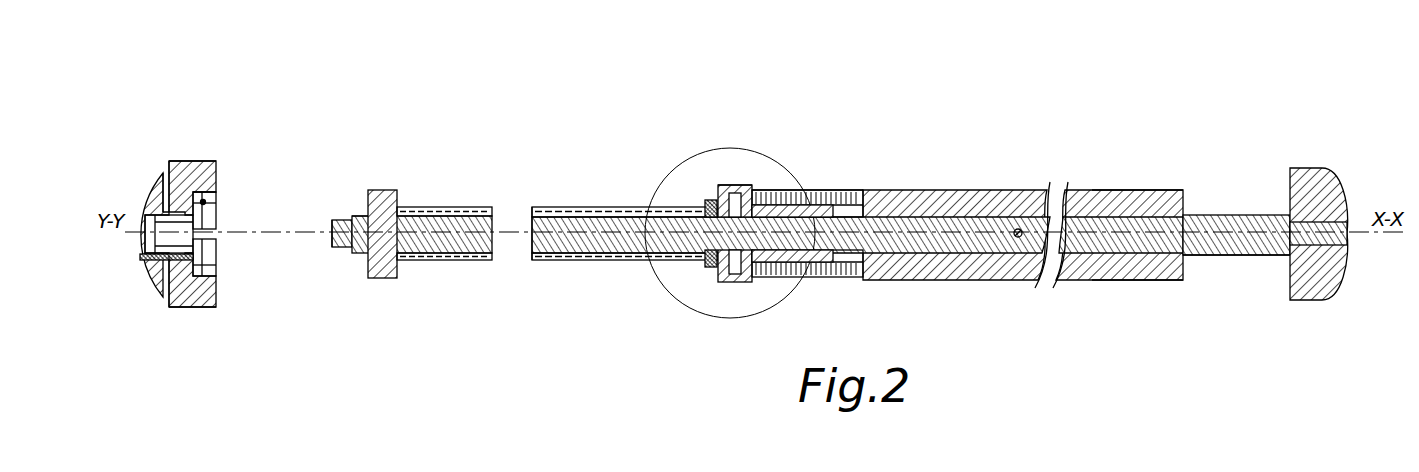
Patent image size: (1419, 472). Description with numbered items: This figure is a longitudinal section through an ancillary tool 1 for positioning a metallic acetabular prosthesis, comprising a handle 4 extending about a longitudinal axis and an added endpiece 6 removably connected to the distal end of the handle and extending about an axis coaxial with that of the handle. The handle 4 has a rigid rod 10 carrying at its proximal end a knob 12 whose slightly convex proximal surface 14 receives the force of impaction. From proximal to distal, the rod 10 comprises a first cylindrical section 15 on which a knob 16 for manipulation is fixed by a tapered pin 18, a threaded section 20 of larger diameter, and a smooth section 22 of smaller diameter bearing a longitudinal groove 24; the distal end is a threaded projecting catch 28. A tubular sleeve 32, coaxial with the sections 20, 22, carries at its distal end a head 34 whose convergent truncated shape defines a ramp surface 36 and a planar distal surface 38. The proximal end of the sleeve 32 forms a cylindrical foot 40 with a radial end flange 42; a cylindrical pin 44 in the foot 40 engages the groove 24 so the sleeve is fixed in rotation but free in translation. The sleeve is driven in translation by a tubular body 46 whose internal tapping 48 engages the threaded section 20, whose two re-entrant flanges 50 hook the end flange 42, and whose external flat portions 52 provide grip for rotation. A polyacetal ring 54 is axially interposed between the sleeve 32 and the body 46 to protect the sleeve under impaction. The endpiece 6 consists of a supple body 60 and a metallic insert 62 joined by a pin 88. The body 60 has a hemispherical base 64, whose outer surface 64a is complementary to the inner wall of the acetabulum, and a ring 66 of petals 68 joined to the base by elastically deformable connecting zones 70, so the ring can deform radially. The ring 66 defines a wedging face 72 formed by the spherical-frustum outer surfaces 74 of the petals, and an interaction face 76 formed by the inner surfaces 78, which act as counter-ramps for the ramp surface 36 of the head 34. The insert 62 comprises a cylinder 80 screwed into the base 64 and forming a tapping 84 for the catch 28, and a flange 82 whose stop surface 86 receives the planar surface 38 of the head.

The ancillary tool 1 is at (955, 269).
The handle 4 is at (1003, 207).
The endpiece 6 is at (197, 229).
The rigid rod 10 is at (1232, 212).
The knob 12 is at (1308, 168).
The convex proximal surface 14 is at (1349, 221).
The first cylindrical section 15 is at (1223, 257).
The knob for manipulation 16 is at (1140, 280).
The tapered pin 18 is at (1019, 238).
The threaded section 20 is at (824, 245).
The smooth section 22 is at (595, 243).
The longitudinal groove 24 is at (600, 207).
The projecting catch 28 is at (334, 219).
The tubular sleeve 32 is at (553, 205).
The head 34 is at (404, 214).
The truncated ramp surface 36 is at (381, 190).
The planar distal surface 38 is at (366, 207).
The cylindrical foot 40 is at (750, 213).
The end flange 42 is at (740, 283).
The cylindrical pin 44 is at (709, 198).
The tubular body 46 is at (739, 182).
The tapping 48 is at (795, 228).
The re-entrant flanges 50 is at (722, 183).
The flat portions 52 is at (783, 275).
The ring 54 is at (740, 198).
The supple body 60 is at (204, 168).
The metallic insert 62 is at (179, 160).
The hemispherical base 64 is at (157, 290).
The dome outer surface 64a is at (147, 272).
The ring of petals 66 is at (187, 160).
The petals 68 is at (221, 298).
The elastically deformable connecting zones 70 is at (166, 172).
The wedging face 72 is at (201, 157).
The outer surfaces 74 is at (199, 309).
The interaction face 76 is at (216, 163).
The inner surfaces 78 is at (208, 262).
The cylinder 80 is at (159, 177).
The flange 82 is at (177, 306).
The tapping 84 is at (144, 215).
The stop surface 86 is at (216, 208).
The pin 88 is at (140, 257).